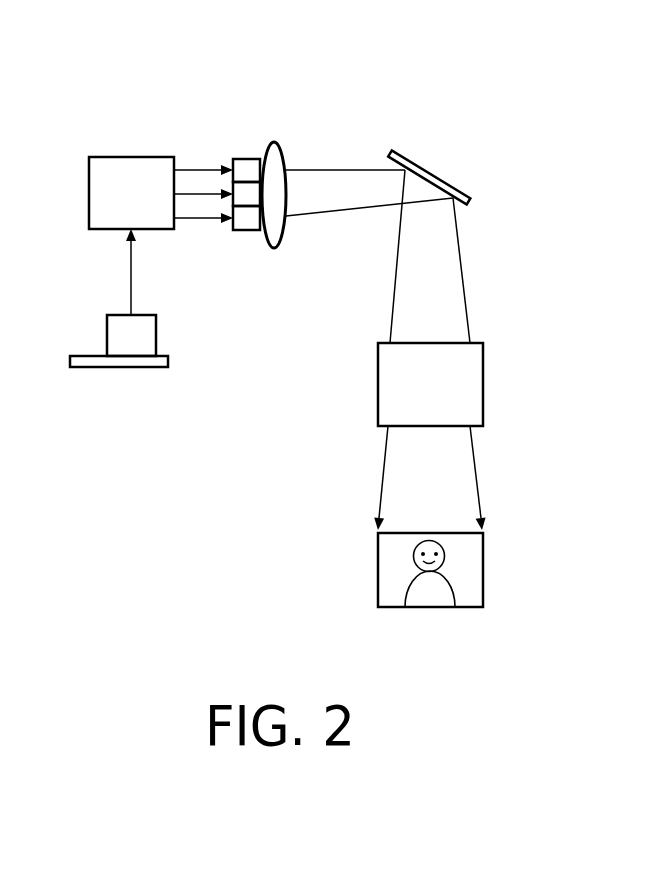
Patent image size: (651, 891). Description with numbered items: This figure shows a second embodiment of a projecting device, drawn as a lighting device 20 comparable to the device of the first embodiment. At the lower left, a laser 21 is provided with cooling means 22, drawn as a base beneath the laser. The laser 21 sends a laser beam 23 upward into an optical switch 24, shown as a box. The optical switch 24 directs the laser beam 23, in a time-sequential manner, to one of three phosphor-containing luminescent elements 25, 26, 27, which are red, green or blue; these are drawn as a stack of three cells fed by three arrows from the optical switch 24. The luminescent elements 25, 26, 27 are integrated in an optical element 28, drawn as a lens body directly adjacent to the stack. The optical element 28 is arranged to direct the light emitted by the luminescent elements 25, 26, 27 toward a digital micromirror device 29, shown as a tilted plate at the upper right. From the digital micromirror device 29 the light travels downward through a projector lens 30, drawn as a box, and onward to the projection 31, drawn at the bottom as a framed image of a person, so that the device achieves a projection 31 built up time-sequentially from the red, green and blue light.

The lighting device 20 is at (114, 77).
The laser 21 is at (156, 329).
The cooling means 22 is at (93, 367).
The laser beam 23 is at (131, 278).
The optical switch 24 is at (117, 206).
The luminescent element 25 is at (247, 222).
The luminescent element 26 is at (242, 195).
The luminescent element 27 is at (246, 170).
The optical element 28 is at (286, 150).
The digital micromirror device 29 is at (433, 175).
The projector lens 30 is at (416, 399).
The projection 31 is at (483, 568).